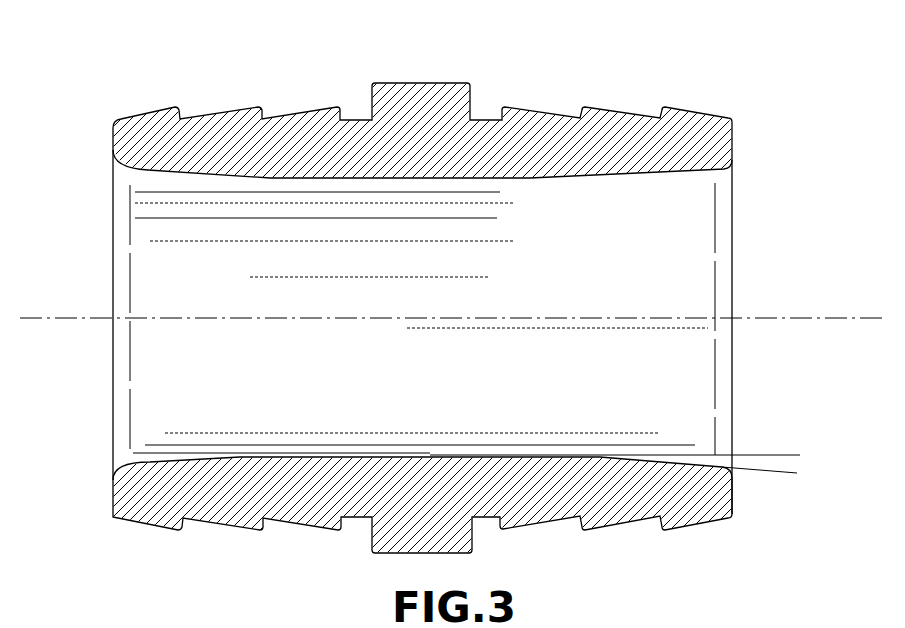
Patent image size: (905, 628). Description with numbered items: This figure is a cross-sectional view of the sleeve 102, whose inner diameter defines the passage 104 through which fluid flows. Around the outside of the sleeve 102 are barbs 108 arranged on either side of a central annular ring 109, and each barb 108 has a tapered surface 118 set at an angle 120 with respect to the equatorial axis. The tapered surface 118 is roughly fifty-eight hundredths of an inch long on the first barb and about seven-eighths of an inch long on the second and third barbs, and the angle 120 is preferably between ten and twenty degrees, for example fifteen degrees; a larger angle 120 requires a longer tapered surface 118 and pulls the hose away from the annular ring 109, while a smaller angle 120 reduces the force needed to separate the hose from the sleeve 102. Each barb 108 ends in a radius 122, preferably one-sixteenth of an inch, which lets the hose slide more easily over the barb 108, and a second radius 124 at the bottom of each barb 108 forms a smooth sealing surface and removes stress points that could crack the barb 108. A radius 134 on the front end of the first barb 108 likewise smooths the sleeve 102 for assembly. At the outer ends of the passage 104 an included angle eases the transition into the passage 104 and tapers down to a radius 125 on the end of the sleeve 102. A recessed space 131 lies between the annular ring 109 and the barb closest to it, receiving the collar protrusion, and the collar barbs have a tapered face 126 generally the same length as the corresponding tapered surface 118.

The sleeve 102 is at (143, 130).
The passage 104 is at (152, 386).
The barb 108 is at (150, 108).
The annular ring 109 is at (430, 82).
The tapered surface 118 is at (532, 110).
The angle 120 is at (540, 128).
The radius 122 is at (505, 107).
The second radius 124 is at (180, 108).
The radius 125 is at (733, 175).
The tapered face 126 is at (787, 502).
The recessed space 131 is at (486, 522).
The radius 134 is at (735, 116).